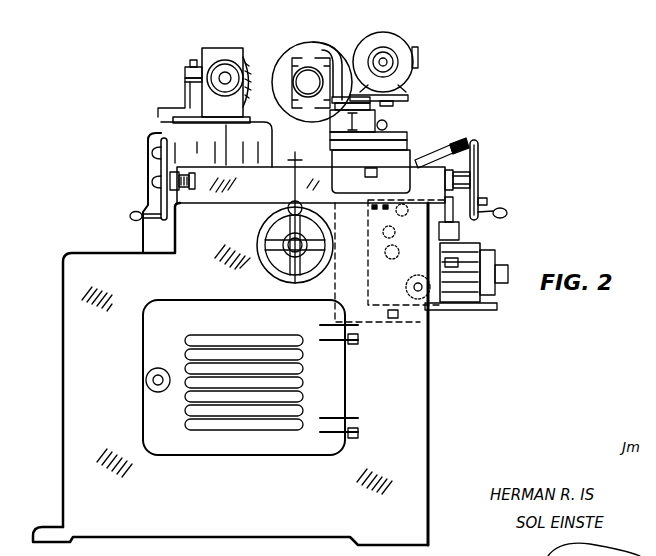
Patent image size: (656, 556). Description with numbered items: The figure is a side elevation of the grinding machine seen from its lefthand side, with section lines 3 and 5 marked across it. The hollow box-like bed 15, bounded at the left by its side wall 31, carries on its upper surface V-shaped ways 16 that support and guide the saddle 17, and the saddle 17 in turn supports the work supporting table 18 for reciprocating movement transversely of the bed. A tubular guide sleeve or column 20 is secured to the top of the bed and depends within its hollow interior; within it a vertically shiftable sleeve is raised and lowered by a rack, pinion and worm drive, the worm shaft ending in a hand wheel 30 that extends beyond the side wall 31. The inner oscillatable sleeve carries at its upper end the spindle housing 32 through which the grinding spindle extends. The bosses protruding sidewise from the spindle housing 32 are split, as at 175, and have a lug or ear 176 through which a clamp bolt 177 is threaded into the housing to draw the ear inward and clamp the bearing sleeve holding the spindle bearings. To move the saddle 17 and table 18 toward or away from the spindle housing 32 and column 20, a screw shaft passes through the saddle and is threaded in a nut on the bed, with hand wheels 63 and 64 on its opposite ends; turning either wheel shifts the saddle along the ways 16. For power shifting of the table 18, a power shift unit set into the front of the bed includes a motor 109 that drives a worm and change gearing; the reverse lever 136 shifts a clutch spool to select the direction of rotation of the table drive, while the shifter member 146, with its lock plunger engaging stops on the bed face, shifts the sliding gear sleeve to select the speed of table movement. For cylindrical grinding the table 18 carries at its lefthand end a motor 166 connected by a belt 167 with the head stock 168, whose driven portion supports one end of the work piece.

The section line 3- 3 is at (238, 30).
The section line 5- 5 is at (430, 352).
The bed 15 is at (414, 394).
The ways 16 is at (186, 200).
The saddle 17 is at (238, 200).
The work supporting table 18 is at (377, 135).
The tubular guide sleeve or column 20 is at (162, 132).
The hand wheel 30 is at (284, 270).
The side wall 31 is at (77, 392).
The spindle housing 32 is at (193, 97).
The hand wheel 63 is at (161, 160).
The hand wheel 64 is at (480, 177).
The motor 109 is at (487, 252).
The reverse lever 136 is at (461, 142).
The shifter member 146 is at (458, 223).
The motor 166 is at (393, 44).
The belt 167 is at (356, 46).
The head stock 168 is at (318, 42).
The split 175 is at (183, 68).
The lug or ear 176 is at (190, 60).
The clamp bolt 177 is at (185, 80).